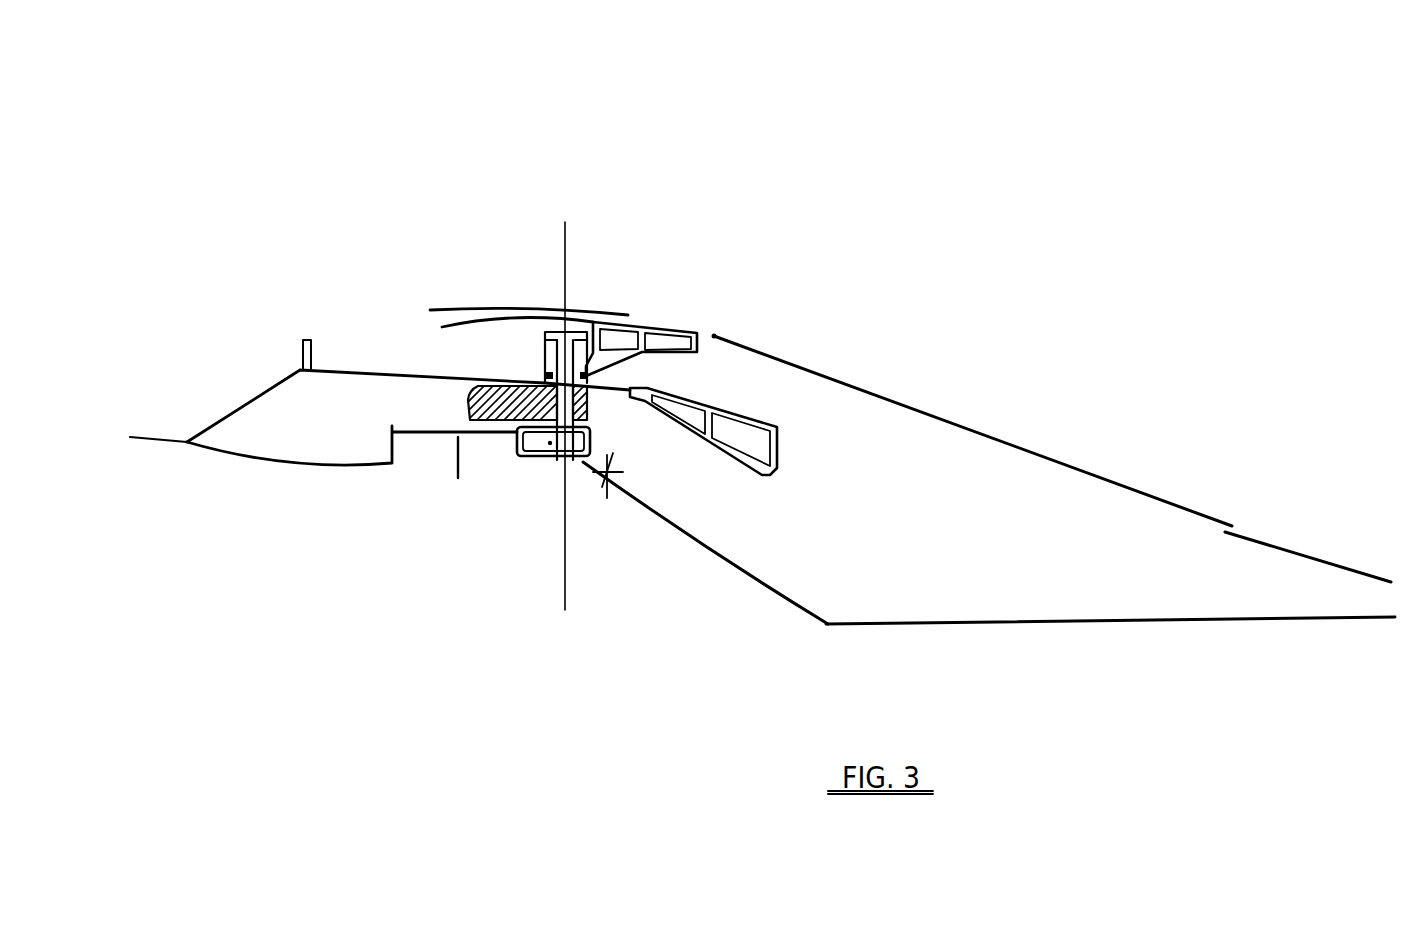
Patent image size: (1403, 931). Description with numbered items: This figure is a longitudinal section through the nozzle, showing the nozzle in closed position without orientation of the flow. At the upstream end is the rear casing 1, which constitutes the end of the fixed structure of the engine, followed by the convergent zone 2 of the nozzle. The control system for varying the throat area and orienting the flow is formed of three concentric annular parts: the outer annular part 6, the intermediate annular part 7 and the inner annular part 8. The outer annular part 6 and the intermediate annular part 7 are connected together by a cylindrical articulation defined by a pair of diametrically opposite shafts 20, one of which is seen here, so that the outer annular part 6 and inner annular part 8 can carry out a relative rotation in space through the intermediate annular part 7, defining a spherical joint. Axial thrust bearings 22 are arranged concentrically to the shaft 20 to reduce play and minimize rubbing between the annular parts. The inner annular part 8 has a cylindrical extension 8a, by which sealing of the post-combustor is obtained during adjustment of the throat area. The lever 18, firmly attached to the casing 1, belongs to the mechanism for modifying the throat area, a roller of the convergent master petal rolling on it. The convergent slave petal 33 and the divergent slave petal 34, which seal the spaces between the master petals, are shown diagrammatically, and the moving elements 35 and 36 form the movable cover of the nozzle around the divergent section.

The rear casing 1 is at (308, 386).
The convergent zone 2 is at (523, 243).
The outer annular part 6 is at (684, 325).
The intermediate annular part 7 is at (473, 385).
The inner annular part 8 is at (550, 443).
The cylindrical extension 8a is at (458, 478).
The lever 18 is at (742, 413).
The shaft 20 is at (570, 337).
The axial thrust bearing 22 is at (585, 375).
The convergent slave petal 33 is at (761, 586).
The divergent slave petal 34 is at (1192, 620).
The moving element 35 is at (971, 428).
The moving element 36 is at (1298, 551).